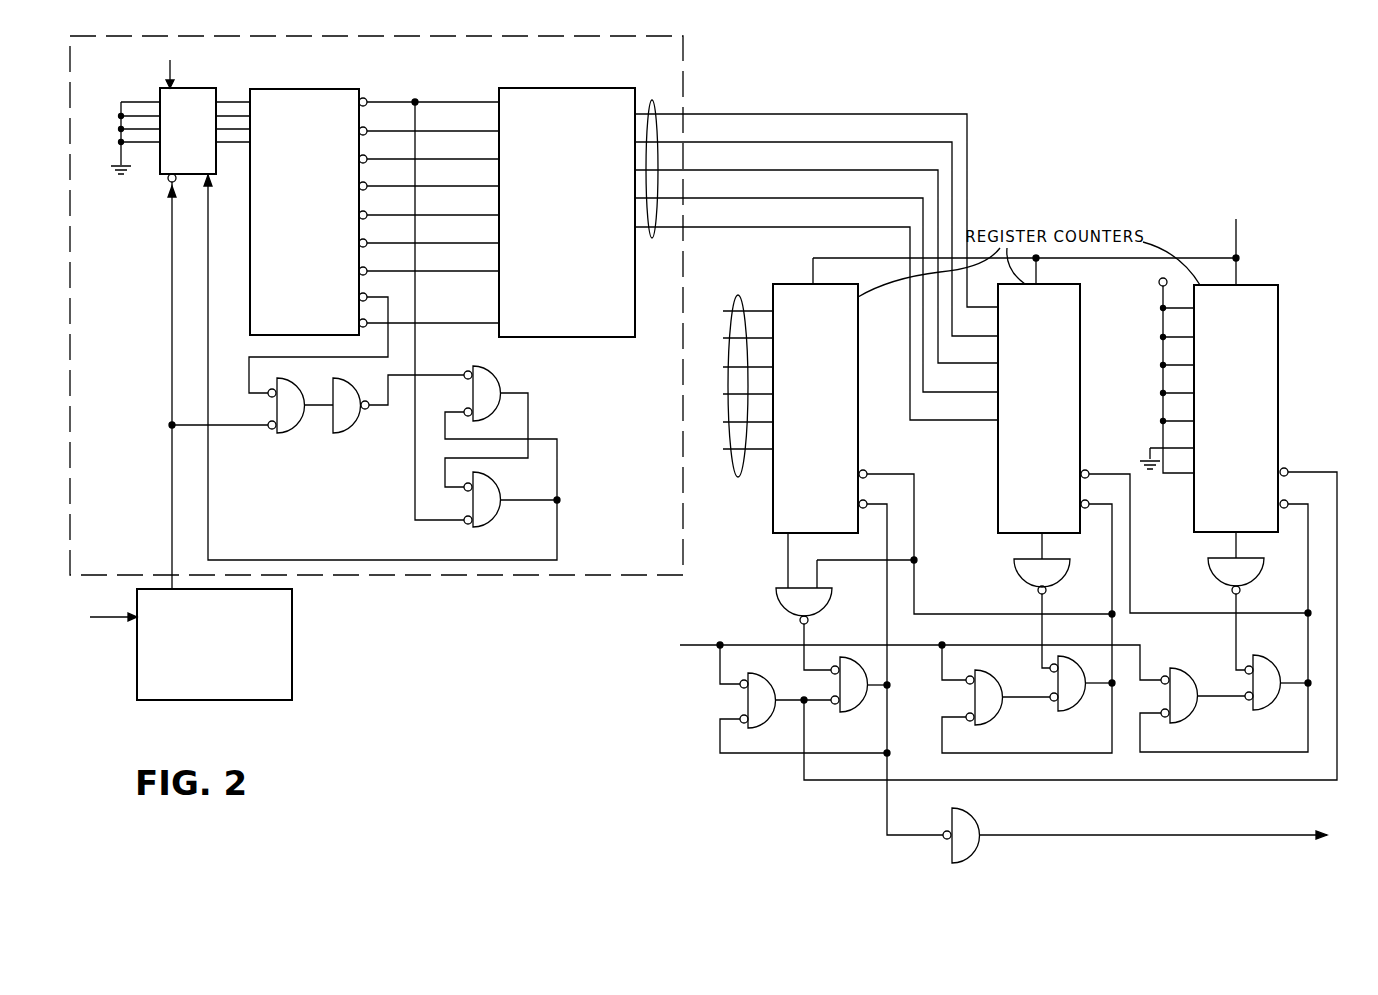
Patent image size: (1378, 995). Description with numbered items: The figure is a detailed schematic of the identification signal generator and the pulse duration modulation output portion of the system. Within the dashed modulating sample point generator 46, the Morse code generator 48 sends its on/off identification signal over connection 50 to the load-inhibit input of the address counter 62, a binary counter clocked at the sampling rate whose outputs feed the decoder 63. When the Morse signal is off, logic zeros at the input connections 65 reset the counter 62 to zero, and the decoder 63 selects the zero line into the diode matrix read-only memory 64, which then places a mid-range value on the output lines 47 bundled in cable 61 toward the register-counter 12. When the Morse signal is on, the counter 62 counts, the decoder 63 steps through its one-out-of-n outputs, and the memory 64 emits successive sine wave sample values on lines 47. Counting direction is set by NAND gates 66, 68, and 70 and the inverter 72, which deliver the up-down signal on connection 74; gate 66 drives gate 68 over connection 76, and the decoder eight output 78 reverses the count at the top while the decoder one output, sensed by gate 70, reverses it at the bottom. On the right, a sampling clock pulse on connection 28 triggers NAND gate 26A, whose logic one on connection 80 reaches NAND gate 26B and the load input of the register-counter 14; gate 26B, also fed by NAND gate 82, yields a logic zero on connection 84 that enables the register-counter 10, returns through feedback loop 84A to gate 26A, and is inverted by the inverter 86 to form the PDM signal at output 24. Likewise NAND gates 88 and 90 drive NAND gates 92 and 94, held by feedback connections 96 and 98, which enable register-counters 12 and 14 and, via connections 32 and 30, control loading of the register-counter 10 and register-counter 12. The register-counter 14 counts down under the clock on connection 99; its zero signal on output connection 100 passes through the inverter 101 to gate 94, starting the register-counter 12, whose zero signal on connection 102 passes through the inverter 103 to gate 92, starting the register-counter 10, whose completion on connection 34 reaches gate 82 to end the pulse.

The register-counter 10 is at (858, 336).
The register-counter 12 is at (1080, 334).
The register-counter 14 is at (1278, 332).
The pulse duration modulation signal output 24 is at (1058, 835).
The NAND gate 26A is at (772, 686).
The NAND gate 26B is at (864, 712).
The connection 28 is at (690, 645).
The connection 30 is at (1175, 602).
The connection 32 is at (974, 605).
The connection 34 is at (788, 562).
The modulating sample point generator 46 is at (553, 576).
The output lines 47 is at (655, 100).
The Morse code generator 48 is at (292, 645).
The connection 50 is at (171, 410).
The input cable 61 is at (740, 298).
The address counter 62 is at (193, 88).
The decoder 63 is at (305, 89).
The diode matrix read-only memory 64 is at (547, 88).
The input connections 65 is at (120, 128).
The NAND gate 66 is at (500, 383).
The NAND gate 68 is at (503, 486).
The NAND gate 70 is at (290, 436).
The inverter 72 is at (352, 436).
The connection 74 is at (330, 546).
The connection 76 is at (528, 414).
The decoder eight output 78 is at (416, 358).
The connection 80 is at (803, 730).
The NAND gate 82 is at (828, 610).
The connection 84 is at (888, 733).
The feedback loop 84A is at (773, 753).
The inverter 86 is at (980, 825).
The NAND gate 88 is at (1000, 684).
The NAND gate 90 is at (1192, 678).
The NAND gate 92 is at (1086, 700).
The NAND gate 94 is at (1280, 700).
The feedback connection 96 is at (1022, 752).
The feedback connection 98 is at (1217, 735).
The connection 99 is at (1236, 242).
The output connection 100 is at (1236, 549).
The inverter 101 is at (1262, 570).
The connection 102 is at (1040, 549).
The inverter 103 is at (1068, 570).